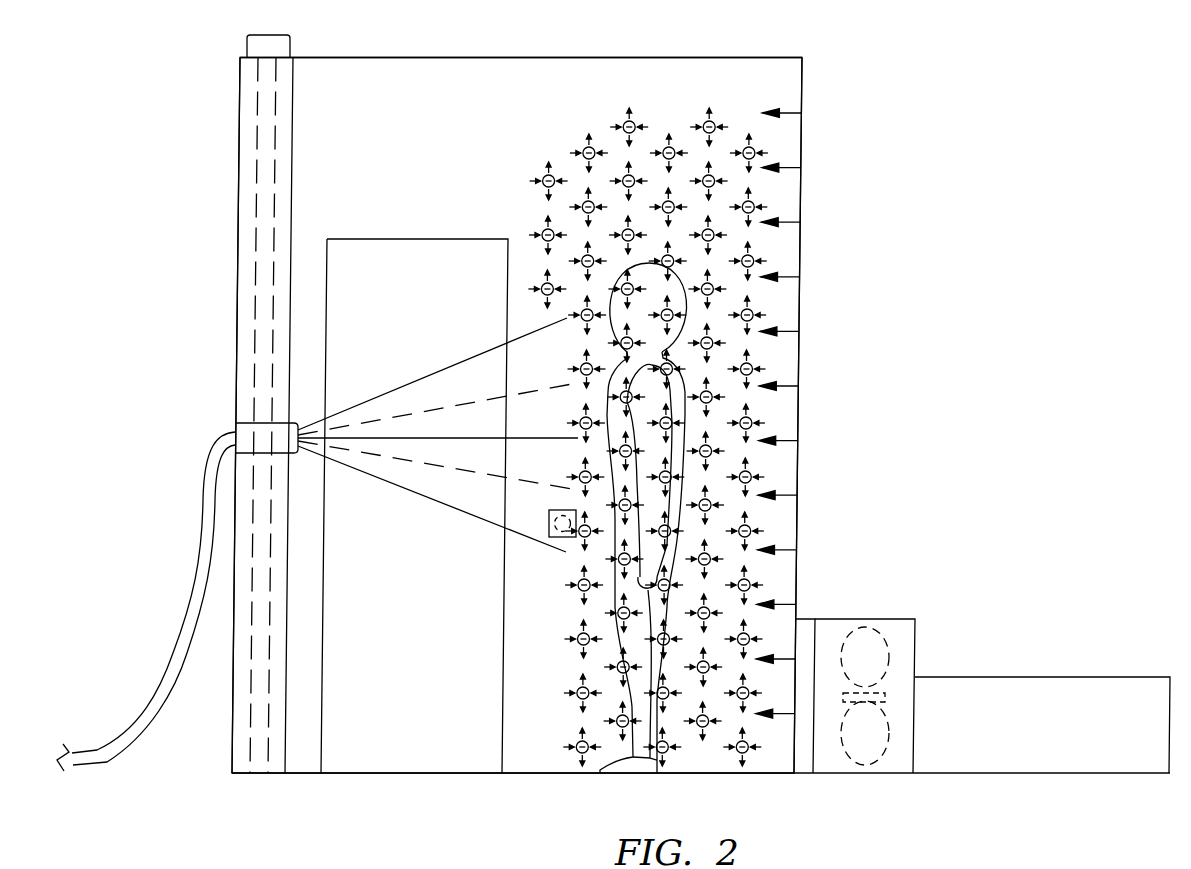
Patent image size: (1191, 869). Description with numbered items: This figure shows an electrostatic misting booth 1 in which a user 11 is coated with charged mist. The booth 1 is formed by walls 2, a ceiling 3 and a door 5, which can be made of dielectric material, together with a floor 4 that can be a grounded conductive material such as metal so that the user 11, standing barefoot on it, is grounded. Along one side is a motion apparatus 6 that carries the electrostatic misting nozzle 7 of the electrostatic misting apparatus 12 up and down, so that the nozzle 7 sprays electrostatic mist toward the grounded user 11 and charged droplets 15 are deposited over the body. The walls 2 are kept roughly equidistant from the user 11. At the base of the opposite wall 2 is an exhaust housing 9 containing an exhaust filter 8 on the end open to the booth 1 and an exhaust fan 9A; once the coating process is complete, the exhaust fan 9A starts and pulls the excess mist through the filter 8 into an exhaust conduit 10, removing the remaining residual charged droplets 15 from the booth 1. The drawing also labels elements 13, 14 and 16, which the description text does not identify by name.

The booth 1 is at (842, 185).
The walls 2 is at (797, 495).
The ceiling 3 is at (545, 58).
The floor 4 is at (552, 775).
The door 5 is at (383, 748).
The motion apparatus 6 is at (287, 77).
The electrostatic misting nozzle 7 is at (247, 403).
The exhaust filter 8 is at (810, 618).
The exhaust housing 9 is at (867, 618).
The exhaust fan 9A is at (890, 650).
The exhaust conduit 10 is at (1002, 763).
The user 11 is at (680, 368).
The electrostatic misting apparatus 12 is at (188, 607).
The sensor 13 is at (580, 519).
The emission beams 14 is at (397, 390).
The charged droplets 15 is at (640, 126).
The air flow 16 is at (788, 275).